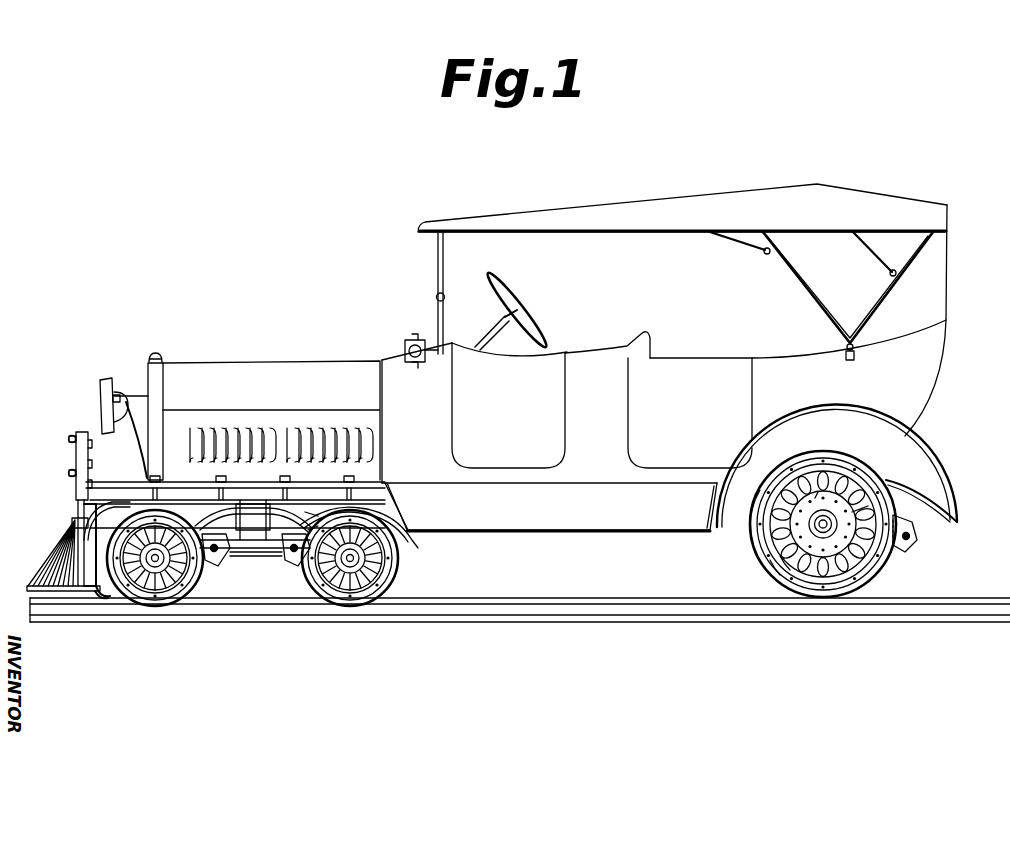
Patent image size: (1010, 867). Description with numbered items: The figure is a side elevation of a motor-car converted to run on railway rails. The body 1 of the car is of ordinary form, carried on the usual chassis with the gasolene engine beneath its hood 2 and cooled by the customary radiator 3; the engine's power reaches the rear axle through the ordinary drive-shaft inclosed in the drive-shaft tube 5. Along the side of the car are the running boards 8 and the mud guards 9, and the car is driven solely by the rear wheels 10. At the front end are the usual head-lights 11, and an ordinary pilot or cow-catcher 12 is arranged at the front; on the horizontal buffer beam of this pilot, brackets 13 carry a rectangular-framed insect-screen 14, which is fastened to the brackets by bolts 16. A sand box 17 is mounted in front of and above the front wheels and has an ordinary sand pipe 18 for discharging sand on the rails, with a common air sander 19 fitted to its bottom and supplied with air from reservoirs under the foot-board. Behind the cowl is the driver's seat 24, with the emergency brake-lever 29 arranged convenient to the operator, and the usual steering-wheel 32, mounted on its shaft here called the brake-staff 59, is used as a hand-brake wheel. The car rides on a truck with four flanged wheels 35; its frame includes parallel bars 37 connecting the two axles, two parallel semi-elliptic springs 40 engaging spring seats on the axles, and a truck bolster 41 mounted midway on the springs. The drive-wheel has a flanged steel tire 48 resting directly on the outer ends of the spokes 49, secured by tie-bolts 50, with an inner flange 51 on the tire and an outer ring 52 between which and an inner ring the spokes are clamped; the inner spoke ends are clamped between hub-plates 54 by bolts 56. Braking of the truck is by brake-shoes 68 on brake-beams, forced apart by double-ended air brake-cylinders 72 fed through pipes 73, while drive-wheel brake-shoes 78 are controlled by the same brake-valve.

The body 1 is at (940, 376).
The hood 2 is at (282, 358).
The radiator 3 is at (150, 383).
The drive-shaft tube 5 is at (738, 527).
The running boards 8 is at (410, 493).
The mud guards 9 is at (380, 490).
The rear wheels 10 is at (846, 466).
The head-lights 11 is at (100, 393).
The pilot 12 is at (55, 550).
The brackets 13 is at (78, 460).
The insect-screen 14 is at (70, 438).
The bolts 16 is at (68, 439).
The sand box 17 is at (107, 521).
The sand pipe 18 is at (98, 597).
The air sander 19 is at (90, 532).
The driver's seat 24 is at (628, 345).
The emergency brake-lever 29 is at (407, 346).
The steering-wheel 32 is at (512, 292).
The truck wheels 35 is at (150, 597).
The parallel bars 37 is at (248, 556).
The semi-elliptic springs 40 is at (214, 556).
The truck bolster 41 is at (235, 518).
The flanged steel tire 48 is at (896, 497).
The spokes 49 is at (825, 580).
The tie-bolts 50 is at (773, 568).
The inner flange 51 is at (803, 578).
The outer ring 52 is at (876, 523).
The hub-plate 54 is at (798, 565).
The bolts 56 is at (816, 497).
The brake-staff 59 is at (480, 330).
The brake-shoes 68 is at (212, 560).
The brake-cylinders 72 is at (262, 540).
The pipes 73 is at (293, 522).
The drive-wheel brake-shoes 78 is at (908, 536).